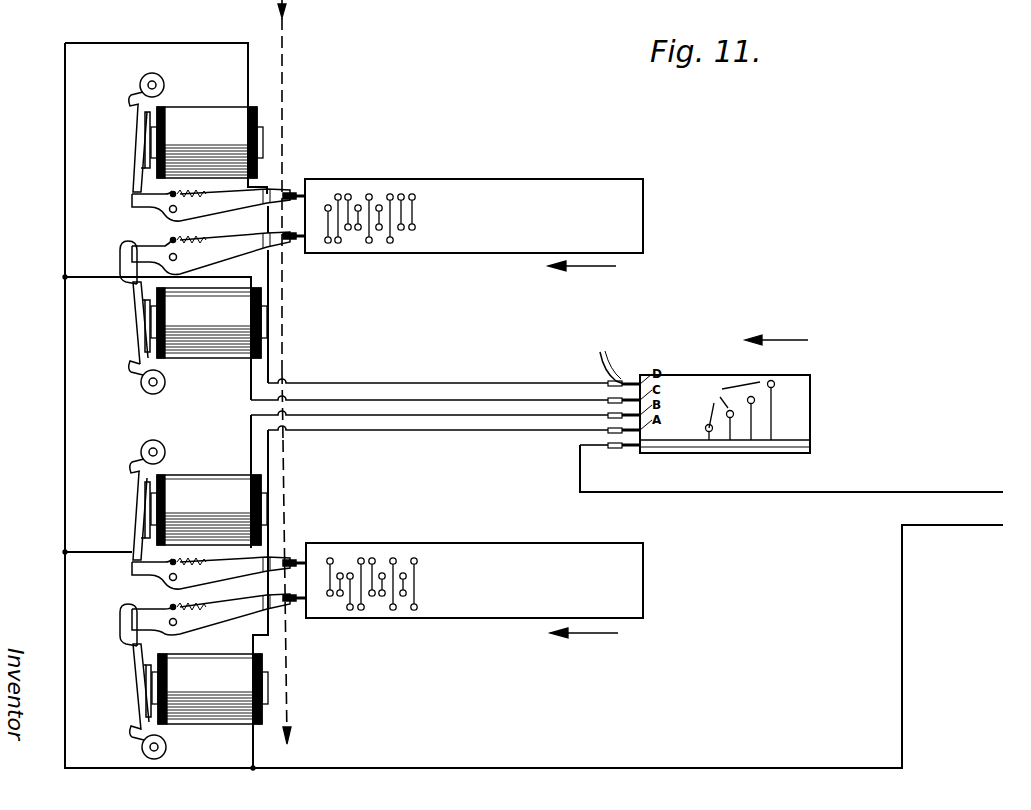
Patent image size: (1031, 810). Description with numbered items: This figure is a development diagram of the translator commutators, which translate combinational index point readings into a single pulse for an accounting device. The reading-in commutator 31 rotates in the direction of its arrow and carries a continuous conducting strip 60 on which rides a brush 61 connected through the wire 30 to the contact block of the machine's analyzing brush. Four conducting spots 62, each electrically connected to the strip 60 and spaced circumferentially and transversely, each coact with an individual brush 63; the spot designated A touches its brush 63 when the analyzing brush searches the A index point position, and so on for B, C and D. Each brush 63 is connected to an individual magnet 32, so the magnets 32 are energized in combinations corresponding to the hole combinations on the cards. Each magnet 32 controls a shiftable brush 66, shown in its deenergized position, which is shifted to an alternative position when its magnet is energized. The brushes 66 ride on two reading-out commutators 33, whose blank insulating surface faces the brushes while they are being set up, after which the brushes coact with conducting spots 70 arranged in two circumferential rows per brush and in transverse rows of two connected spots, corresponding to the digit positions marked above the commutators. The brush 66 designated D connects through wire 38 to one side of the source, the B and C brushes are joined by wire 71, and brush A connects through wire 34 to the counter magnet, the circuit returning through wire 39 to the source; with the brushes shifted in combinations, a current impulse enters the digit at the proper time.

The wire 30 is at (915, 492).
The reading-in commutator 31 is at (676, 380).
The magnet 32 is at (185, 110).
The reading-out commutator 33 is at (507, 192).
The wire 34 is at (287, 672).
The wire 38 is at (283, 79).
The wire 39 is at (960, 527).
The continuous conducting strip 60 is at (742, 442).
The brush 61 is at (628, 447).
The conducting spots 62 is at (726, 404).
The brush 63 is at (607, 357).
The shiftable brush 66 is at (216, 210).
The conducting spots 70 is at (349, 195).
The wire 71 is at (285, 350).